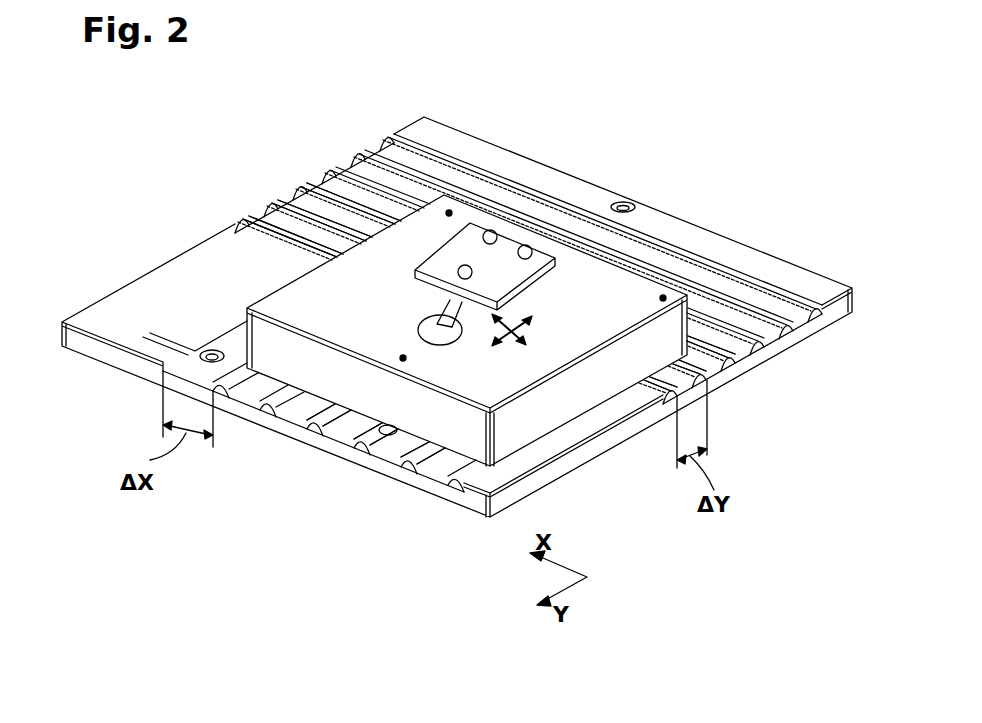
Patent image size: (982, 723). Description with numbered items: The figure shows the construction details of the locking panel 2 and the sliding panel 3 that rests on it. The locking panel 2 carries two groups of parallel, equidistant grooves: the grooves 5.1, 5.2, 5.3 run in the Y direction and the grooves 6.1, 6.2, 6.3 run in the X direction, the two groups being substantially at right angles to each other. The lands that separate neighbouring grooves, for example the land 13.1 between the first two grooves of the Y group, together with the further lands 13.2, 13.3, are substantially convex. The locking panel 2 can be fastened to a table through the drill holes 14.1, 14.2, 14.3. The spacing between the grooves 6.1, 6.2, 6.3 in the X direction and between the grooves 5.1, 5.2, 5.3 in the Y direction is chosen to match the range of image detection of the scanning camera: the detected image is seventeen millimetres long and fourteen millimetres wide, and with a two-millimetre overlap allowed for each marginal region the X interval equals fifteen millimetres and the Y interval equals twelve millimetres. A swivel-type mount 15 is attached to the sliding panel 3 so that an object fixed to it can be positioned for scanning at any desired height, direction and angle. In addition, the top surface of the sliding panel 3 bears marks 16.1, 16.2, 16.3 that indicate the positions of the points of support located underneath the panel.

The locking panel 2 is at (727, 247).
The sliding panel 3 is at (295, 302).
The groove 5.1 is at (677, 397).
The groove 5.2 is at (684, 383).
The groove 5.3 is at (728, 369).
The groove 6.1 is at (390, 430).
The groove 6.2 is at (357, 434).
The groove 6.3 is at (307, 424).
The land 13.1 is at (250, 212).
The land 13.2 is at (286, 194).
The land 13.3 is at (314, 178).
The drill hole 14.1 is at (628, 200).
The drill hole 14.2 is at (395, 435).
The drill hole 14.3 is at (205, 352).
The swivel-type mount 15 is at (481, 226).
The mark 16.1 is at (665, 297).
The mark 16.2 is at (402, 360).
The mark 16.3 is at (449, 211).